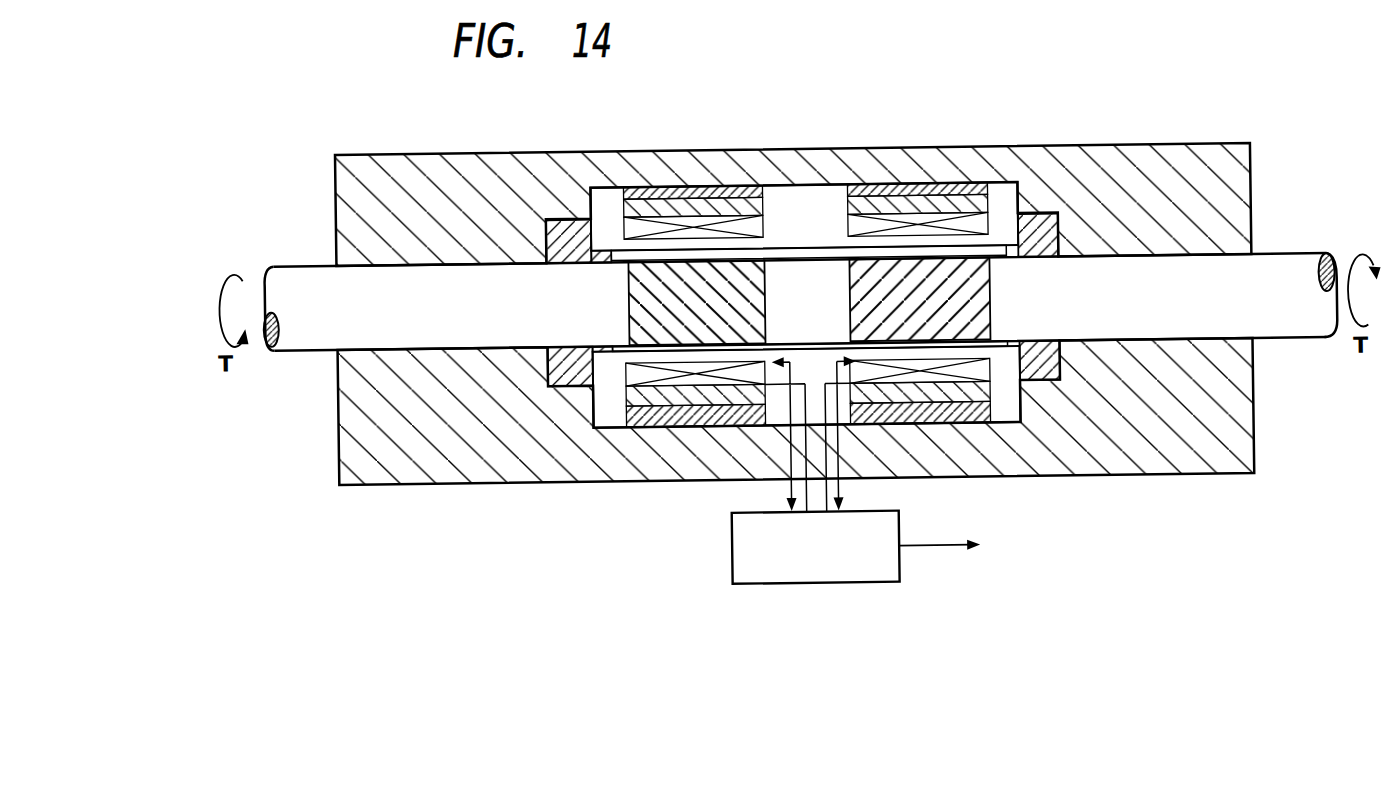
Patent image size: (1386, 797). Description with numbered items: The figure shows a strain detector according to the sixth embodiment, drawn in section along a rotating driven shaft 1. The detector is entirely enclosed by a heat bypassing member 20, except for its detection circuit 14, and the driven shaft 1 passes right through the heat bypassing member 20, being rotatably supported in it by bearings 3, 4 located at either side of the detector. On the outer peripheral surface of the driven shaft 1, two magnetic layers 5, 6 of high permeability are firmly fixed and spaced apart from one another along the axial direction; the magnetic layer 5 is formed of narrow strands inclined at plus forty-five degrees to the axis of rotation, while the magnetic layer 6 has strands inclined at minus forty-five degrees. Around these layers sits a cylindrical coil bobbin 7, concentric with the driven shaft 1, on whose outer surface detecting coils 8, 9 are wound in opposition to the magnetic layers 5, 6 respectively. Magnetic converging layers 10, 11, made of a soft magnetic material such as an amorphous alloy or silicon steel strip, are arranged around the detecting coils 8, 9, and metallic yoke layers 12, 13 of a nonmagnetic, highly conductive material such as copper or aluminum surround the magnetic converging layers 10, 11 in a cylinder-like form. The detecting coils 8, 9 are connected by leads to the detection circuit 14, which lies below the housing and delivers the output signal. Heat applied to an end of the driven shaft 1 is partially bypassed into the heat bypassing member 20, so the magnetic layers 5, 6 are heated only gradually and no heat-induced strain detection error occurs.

The driven shaft 1 is at (1276, 270).
The bearing 3 is at (1039, 227).
The bearing 4 is at (561, 231).
The magnetic layer 5 is at (975, 295).
The magnetic layer 6 is at (623, 294).
The coil bobbin 7 is at (800, 201).
The detecting coil 8 is at (964, 230).
The detecting coil 9 is at (726, 230).
The magnetic converging layer 10 is at (911, 210).
The magnetic converging layer 11 is at (679, 211).
The metallic yoke layer 12 is at (862, 192).
The metallic yoke layer 13 is at (631, 201).
The detection circuit 14 is at (727, 538).
The heat bypassing member 20 is at (1113, 175).